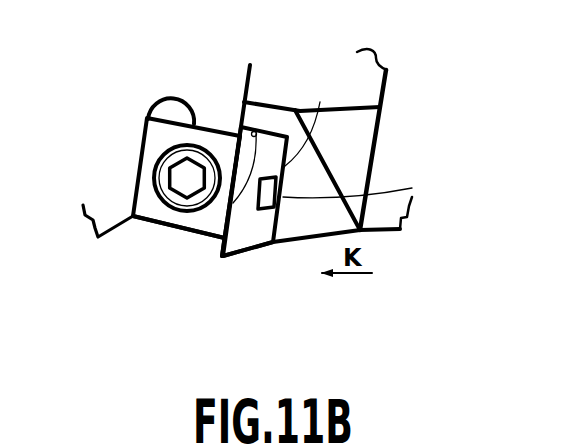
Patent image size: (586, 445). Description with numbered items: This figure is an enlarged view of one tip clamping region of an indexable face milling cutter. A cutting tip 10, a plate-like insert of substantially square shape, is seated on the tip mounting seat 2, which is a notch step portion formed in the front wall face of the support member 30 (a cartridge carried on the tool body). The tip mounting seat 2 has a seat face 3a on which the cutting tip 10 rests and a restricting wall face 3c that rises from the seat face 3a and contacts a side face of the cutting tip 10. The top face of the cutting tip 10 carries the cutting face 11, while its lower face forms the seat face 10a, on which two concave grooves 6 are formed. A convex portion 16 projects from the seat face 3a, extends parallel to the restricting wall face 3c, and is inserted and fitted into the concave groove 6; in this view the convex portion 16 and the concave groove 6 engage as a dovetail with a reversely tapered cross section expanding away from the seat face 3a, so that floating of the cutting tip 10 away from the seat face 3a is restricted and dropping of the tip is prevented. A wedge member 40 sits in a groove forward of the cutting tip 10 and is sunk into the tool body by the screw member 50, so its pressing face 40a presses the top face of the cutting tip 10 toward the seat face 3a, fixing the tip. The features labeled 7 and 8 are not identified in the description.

The tip mounting seat 2 is at (251, 221).
The seat face 3a is at (276, 215).
The restricting wall face 3c is at (247, 123).
The concave groove 6 is at (250, 188).
The holder top surface 7 is at (365, 74).
The pressing portion 8 is at (175, 142).
The cutting tip 10 is at (212, 262).
The seat face 10a is at (308, 147).
The cutting face 11 is at (232, 203).
The convex portion 16 is at (365, 185).
The support member 30 is at (360, 124).
The wedge member 40 is at (135, 122).
The pressing face 40a is at (213, 236).
The screw member 50 is at (185, 178).